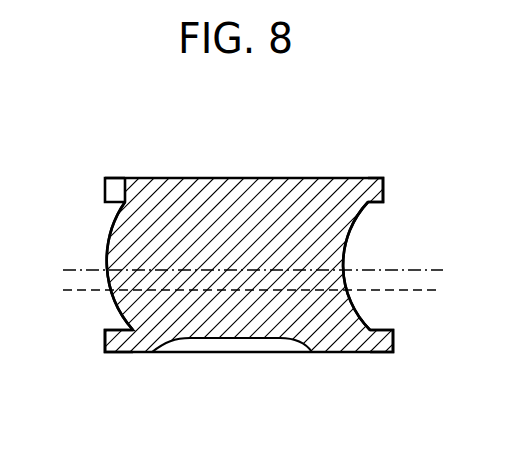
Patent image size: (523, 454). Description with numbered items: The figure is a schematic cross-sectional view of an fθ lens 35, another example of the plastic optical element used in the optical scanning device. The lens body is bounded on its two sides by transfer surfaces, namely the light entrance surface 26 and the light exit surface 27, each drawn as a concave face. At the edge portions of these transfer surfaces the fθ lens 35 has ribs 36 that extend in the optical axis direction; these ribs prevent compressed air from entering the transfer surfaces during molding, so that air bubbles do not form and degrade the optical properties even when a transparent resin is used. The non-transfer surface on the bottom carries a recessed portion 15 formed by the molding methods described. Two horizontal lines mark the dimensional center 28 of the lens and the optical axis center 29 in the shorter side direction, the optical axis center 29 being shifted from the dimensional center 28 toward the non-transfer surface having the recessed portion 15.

The recessed portion 15 is at (234, 352).
The light entrance surface 26 is at (363, 239).
The light exit surface 27 is at (107, 312).
The dimensional center 28 is at (71, 268).
The optical axis center 29 is at (63, 296).
The fθ lens 35 is at (268, 170).
The rib 36 is at (113, 178).